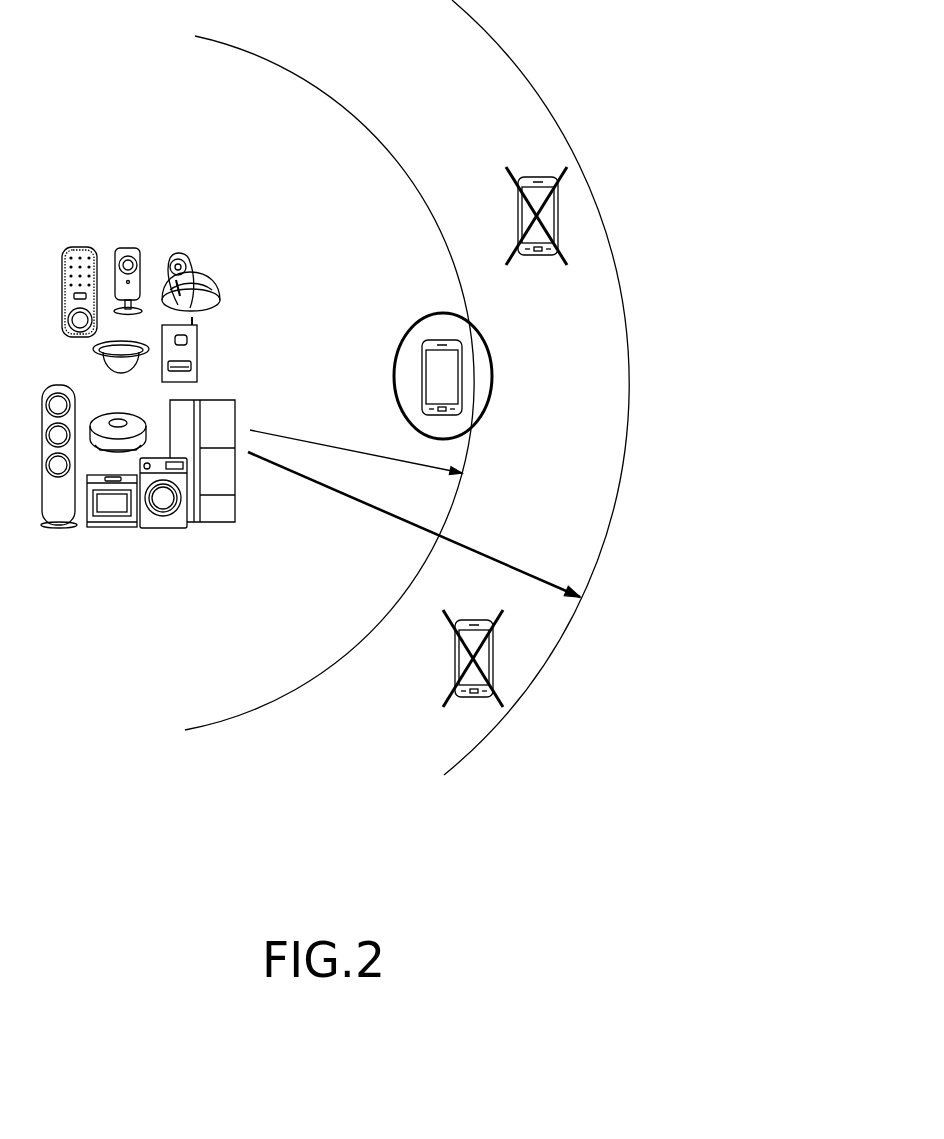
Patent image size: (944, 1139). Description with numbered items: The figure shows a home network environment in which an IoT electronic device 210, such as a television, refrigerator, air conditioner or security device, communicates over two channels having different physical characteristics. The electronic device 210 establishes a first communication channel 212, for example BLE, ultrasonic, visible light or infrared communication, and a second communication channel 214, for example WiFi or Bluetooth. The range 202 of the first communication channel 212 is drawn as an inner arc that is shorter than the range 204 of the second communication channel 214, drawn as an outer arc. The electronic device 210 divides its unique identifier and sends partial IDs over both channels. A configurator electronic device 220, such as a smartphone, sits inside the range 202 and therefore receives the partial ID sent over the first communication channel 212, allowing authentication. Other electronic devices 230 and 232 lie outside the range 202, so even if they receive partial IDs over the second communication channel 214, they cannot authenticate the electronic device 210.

The range of the first communication channel 202 is at (464, 290).
The range of the second communication channel 204 is at (629, 382).
The electronic device 210 is at (139, 570).
The first communication channel 212 is at (314, 439).
The second communication channel 214 is at (318, 484).
The electronic device 220 is at (493, 374).
The electronic device 230 is at (536, 176).
The electronic device 232 is at (472, 619).